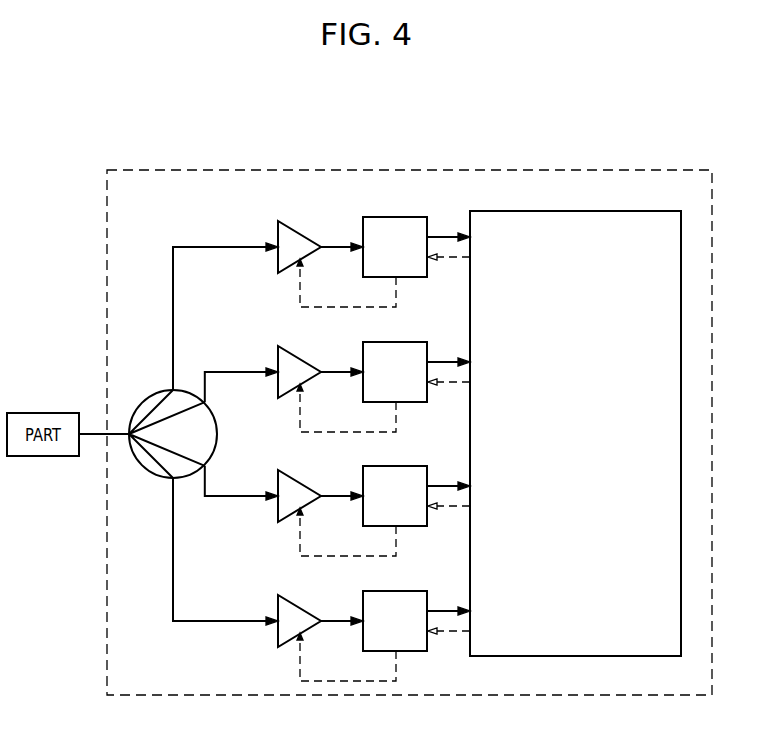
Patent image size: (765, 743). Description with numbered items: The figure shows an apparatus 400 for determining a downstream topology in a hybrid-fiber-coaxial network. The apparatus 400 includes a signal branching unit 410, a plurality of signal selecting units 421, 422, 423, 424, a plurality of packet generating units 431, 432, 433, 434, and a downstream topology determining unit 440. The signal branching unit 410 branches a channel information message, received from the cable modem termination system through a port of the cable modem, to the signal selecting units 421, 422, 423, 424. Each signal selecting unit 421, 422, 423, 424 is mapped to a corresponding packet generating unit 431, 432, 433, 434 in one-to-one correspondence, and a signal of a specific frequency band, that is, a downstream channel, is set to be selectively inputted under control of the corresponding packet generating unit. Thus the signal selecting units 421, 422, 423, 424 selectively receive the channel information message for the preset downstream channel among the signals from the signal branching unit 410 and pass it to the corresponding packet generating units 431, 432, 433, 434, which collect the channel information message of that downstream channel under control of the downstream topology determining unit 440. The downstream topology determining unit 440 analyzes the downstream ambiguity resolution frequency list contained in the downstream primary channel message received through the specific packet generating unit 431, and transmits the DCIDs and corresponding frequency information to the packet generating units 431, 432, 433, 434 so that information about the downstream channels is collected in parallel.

The apparatus 400 is at (668, 170).
The signal branching unit 410 is at (217, 434).
The signal selecting unit 421 is at (296, 232).
The signal selecting unit 422 is at (296, 357).
The signal selecting unit 423 is at (296, 481).
The signal selecting unit 424 is at (296, 606).
The packet generating unit 431 is at (385, 217).
The packet generating unit 432 is at (385, 342).
The packet generating unit 433 is at (385, 466).
The packet generating unit 434 is at (385, 591).
The downstream topology determining unit 440 is at (632, 211).